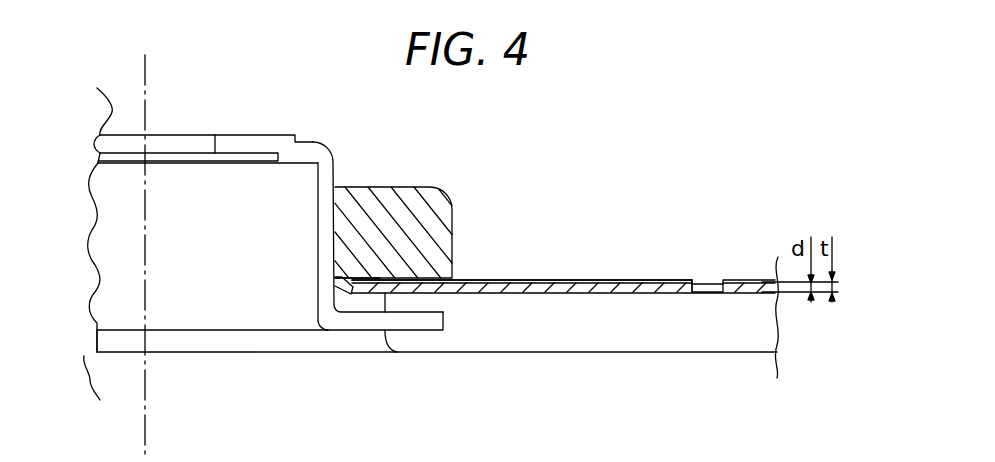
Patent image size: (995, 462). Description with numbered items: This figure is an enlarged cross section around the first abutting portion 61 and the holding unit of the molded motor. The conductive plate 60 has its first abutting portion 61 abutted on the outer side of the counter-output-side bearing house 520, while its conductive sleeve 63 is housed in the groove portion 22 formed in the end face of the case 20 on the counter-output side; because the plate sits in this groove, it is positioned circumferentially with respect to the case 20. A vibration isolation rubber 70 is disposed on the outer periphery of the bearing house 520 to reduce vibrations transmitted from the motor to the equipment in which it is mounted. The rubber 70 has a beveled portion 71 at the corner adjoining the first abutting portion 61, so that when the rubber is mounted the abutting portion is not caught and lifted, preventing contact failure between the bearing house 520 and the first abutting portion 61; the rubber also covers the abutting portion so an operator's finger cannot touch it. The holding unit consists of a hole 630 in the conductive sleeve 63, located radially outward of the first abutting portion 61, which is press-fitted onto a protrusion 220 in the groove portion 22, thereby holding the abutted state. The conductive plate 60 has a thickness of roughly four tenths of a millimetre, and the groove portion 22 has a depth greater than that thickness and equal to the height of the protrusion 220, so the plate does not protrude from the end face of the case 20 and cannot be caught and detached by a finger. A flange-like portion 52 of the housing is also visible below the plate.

The counter-output-side bearing house 520 is at (320, 142).
The beveled portion 71 is at (352, 272).
The vibration isolation rubber 70 is at (392, 186).
The conductive plate 60 is at (512, 280).
The groove portion 22 is at (615, 280).
The hole 630 is at (690, 286).
The protrusion 220 is at (709, 283).
The first abutting portion 61 is at (343, 289).
The flange of housing 52 is at (414, 322).
The conductive sleeve 63 is at (508, 293).
The case 20 is at (635, 335).